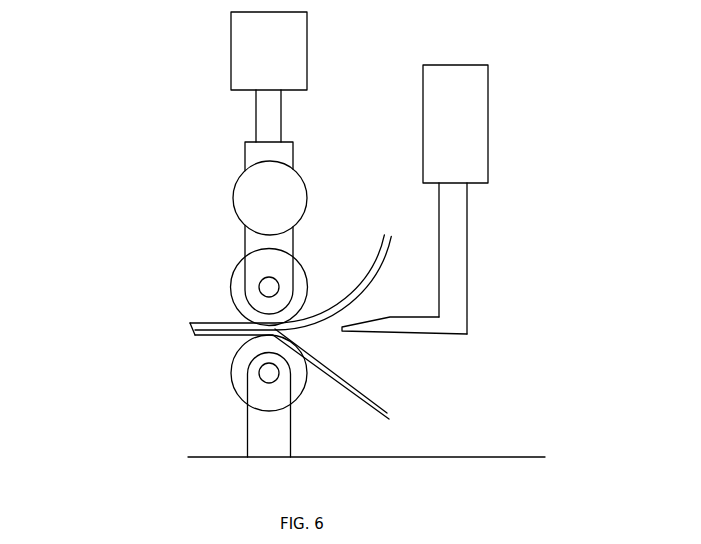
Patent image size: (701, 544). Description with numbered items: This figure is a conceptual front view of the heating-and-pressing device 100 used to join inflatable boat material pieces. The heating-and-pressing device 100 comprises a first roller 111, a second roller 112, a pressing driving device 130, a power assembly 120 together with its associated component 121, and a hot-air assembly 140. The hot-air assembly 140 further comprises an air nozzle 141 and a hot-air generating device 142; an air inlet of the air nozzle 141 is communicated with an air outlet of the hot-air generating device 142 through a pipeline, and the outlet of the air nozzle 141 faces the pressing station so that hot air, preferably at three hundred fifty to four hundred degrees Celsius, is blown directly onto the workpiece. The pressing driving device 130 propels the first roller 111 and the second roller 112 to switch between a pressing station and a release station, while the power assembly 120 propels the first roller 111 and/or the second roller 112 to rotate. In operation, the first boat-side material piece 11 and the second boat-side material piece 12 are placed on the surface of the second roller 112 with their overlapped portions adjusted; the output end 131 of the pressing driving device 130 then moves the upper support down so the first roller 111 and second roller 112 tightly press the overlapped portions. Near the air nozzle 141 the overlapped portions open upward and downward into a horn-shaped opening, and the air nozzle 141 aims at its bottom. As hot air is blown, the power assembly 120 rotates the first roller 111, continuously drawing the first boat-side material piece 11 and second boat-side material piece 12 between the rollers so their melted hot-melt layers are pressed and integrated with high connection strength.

The heating-and-pressing device 100 is at (158, 258).
The pressing driving device 130 is at (233, 62).
The pressing driving device output end 131 is at (257, 108).
The power assembly 120 is at (236, 190).
The pivot roller 121 is at (283, 195).
The first roller 111 is at (230, 287).
The second roller 112 is at (230, 385).
The first boat-side material piece 11 is at (357, 283).
The second boat-side material piece 12 is at (356, 392).
The air nozzle 141 is at (368, 333).
The hot-air assembly 140 is at (447, 340).
The hot-air generating device 142 is at (472, 107).